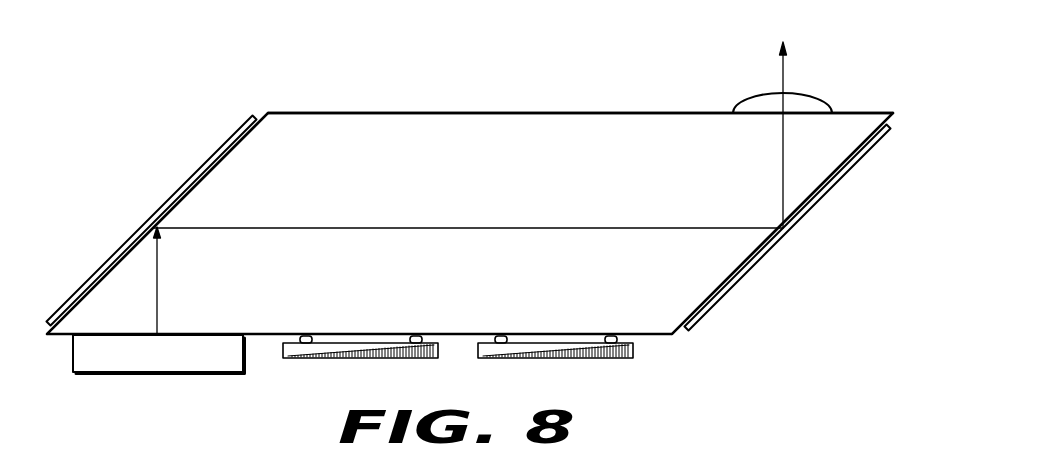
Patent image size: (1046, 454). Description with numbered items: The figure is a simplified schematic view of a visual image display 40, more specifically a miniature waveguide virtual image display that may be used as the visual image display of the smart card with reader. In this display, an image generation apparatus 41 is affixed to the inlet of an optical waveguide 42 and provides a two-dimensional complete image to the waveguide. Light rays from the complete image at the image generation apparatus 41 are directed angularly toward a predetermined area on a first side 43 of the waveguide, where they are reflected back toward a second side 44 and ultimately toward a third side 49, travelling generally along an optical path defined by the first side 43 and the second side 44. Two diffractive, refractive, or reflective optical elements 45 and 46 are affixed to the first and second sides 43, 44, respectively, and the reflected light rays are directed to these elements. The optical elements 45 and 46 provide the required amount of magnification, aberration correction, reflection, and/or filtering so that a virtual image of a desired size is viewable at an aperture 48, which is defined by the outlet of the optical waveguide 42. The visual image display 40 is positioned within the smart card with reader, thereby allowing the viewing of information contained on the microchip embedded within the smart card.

The visual image display 40 is at (470, 231).
The image generation apparatus 41 is at (157, 373).
The optical waveguide 42 is at (472, 293).
The first side 43 is at (227, 155).
The second side 44 is at (728, 280).
The optical element 45 is at (184, 189).
The optical element 46 is at (767, 252).
The aperture 48 is at (807, 86).
The third side 49 is at (578, 115).